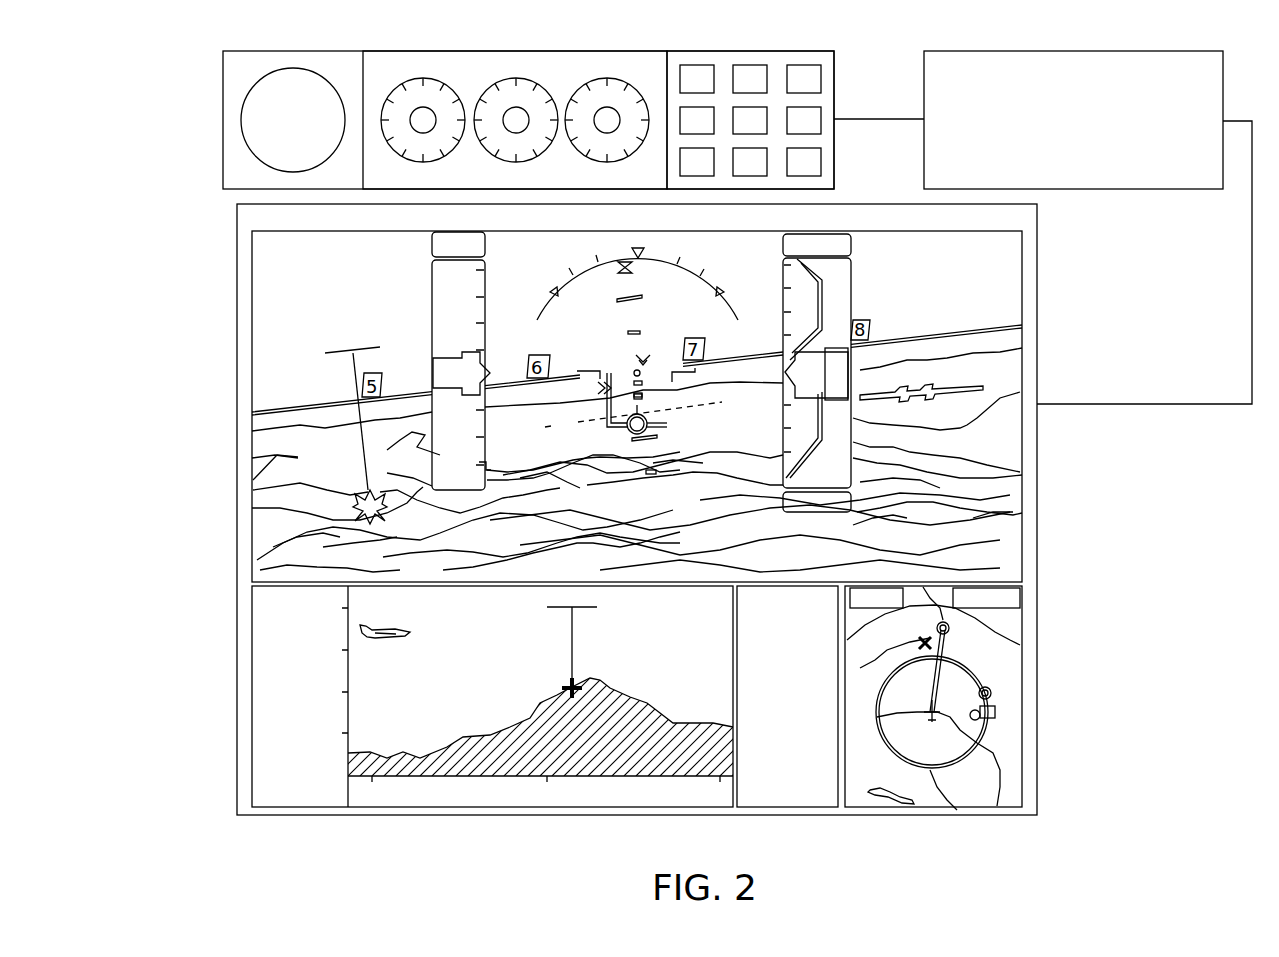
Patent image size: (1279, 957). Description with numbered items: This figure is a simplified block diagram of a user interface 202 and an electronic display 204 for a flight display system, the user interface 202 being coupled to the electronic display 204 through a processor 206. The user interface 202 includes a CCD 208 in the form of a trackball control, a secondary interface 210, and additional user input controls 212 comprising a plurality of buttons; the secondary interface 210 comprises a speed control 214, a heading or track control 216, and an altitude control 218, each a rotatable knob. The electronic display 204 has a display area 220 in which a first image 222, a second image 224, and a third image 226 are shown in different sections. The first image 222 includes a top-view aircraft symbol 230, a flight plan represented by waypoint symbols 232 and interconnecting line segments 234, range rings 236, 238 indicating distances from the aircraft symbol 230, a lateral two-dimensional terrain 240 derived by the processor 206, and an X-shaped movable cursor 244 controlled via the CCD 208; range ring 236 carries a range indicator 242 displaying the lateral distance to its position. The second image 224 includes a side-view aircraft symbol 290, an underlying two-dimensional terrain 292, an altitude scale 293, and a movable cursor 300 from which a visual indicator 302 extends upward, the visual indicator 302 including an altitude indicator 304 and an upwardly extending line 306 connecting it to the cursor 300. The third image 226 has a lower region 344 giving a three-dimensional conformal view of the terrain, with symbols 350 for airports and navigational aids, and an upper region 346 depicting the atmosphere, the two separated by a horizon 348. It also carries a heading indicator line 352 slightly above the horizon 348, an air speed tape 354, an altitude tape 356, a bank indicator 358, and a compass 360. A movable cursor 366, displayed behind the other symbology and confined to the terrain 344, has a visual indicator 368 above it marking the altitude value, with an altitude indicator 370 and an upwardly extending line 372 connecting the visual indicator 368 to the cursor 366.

The user interface 202 is at (223, 115).
The electronic display 204 is at (237, 245).
The processor 206 is at (1122, 190).
The CCD 208 is at (250, 150).
The secondary interface 210 is at (562, 66).
The additional user input controls 212 is at (820, 80).
The speed control 214 is at (413, 158).
The heading or track control 216 is at (505, 158).
The altitude control 218 is at (595, 158).
The display area 220 is at (252, 273).
The first image 222 is at (1010, 775).
The second image 224 is at (268, 678).
The third image 226 is at (992, 552).
The top-view aircraft symbol 230 is at (877, 718).
The waypoint symbol 232 is at (923, 586).
The interconnecting line segment 234 is at (950, 667).
The range ring 236 is at (945, 800).
The range ring 238 is at (847, 633).
The terrain 240 is at (867, 765).
The range indicator 242 is at (993, 718).
The movable cursor 244 is at (863, 667).
The side-view aircraft symbol 290 is at (386, 640).
The terrain 292 is at (612, 690).
The altitude scale 293 is at (285, 608).
The movable cursor 300 is at (563, 688).
The visual indicator 302 is at (598, 607).
The altitude indicator 304 is at (547, 598).
The upwardly extending line 306 is at (570, 648).
The lower region 344 is at (260, 456).
The upper region 346 is at (256, 392).
The horizon 348 is at (260, 432).
The symbols 350 is at (933, 400).
The heading indicator line 352 is at (932, 334).
The air speed tape 354 is at (432, 243).
The altitude tape 356 is at (852, 245).
The bank indicator 358 is at (577, 280).
The compass 360 is at (713, 402).
The movable cursor 366 is at (278, 510).
The visual indicator 368 is at (343, 354).
The altitude indicator 370 is at (348, 326).
The upwardly extending line 372 is at (362, 352).